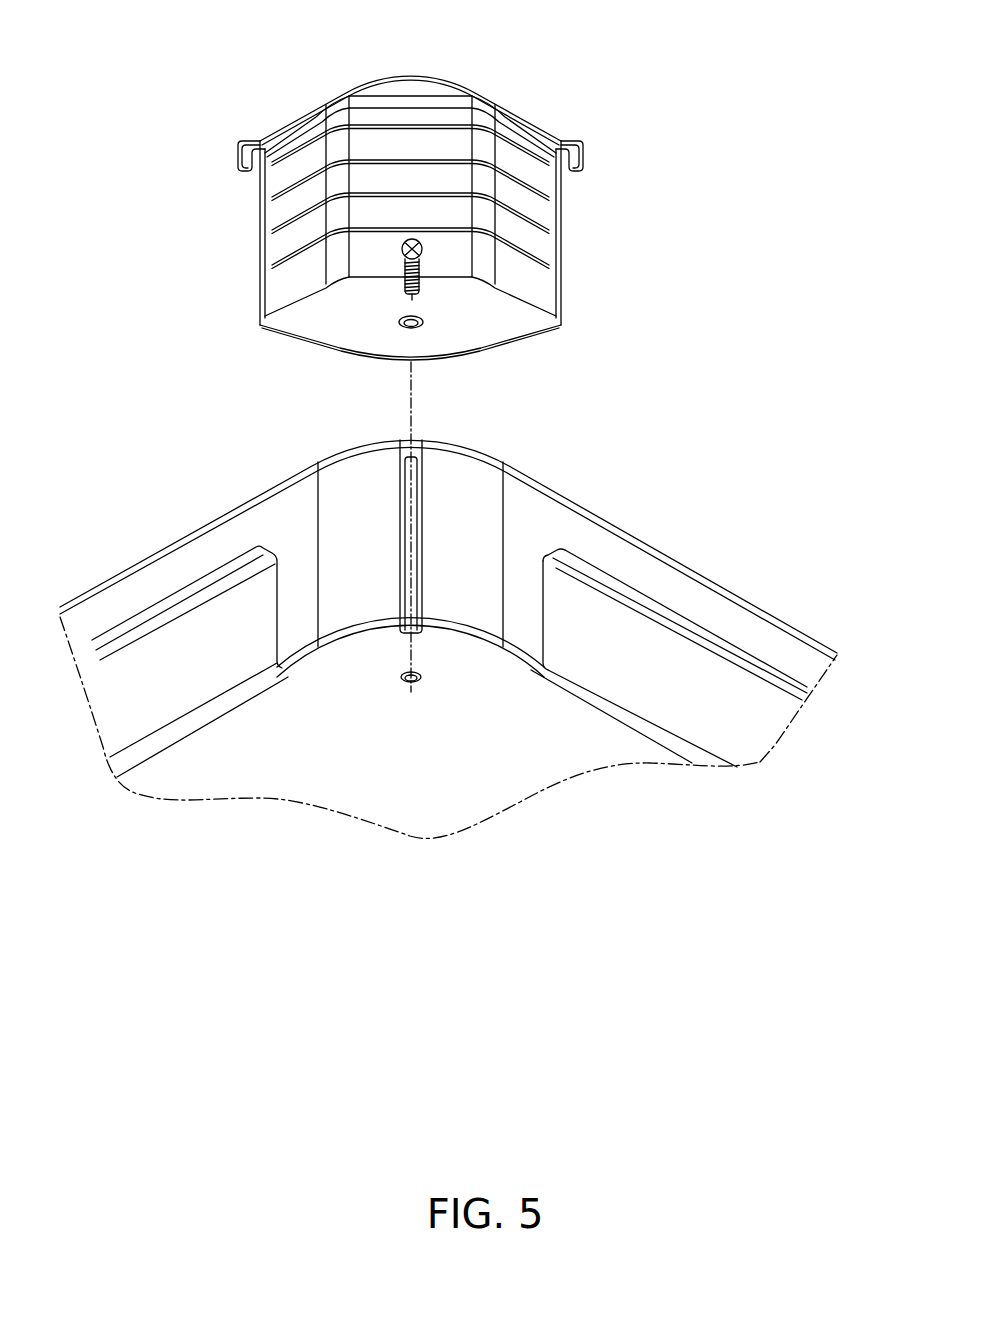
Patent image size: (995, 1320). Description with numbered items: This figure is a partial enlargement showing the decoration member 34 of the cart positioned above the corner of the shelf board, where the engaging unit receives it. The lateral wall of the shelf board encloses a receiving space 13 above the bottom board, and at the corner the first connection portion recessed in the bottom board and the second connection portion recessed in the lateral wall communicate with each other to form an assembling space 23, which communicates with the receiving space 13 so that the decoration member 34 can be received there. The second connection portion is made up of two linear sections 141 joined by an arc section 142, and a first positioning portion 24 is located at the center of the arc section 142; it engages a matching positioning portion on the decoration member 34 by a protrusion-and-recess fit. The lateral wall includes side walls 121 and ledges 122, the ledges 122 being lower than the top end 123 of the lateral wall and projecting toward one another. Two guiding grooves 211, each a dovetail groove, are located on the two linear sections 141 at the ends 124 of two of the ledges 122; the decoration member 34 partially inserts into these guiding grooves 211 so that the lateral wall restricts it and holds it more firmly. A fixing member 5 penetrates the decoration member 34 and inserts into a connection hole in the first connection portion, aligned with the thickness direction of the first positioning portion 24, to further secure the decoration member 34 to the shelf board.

The fixing member 5 is at (420, 264).
The receiving space 13 is at (494, 769).
The assembling space 23 is at (343, 577).
The first positioning portion 24 is at (403, 487).
The decoration member 34 is at (553, 80).
The side wall 121 is at (782, 655).
The ledge 122 is at (698, 607).
The top end 123 is at (658, 552).
The end 124 is at (517, 682).
The linear section 141 is at (287, 517).
The arc section 142 is at (472, 472).
The guiding groove 211 is at (558, 551).